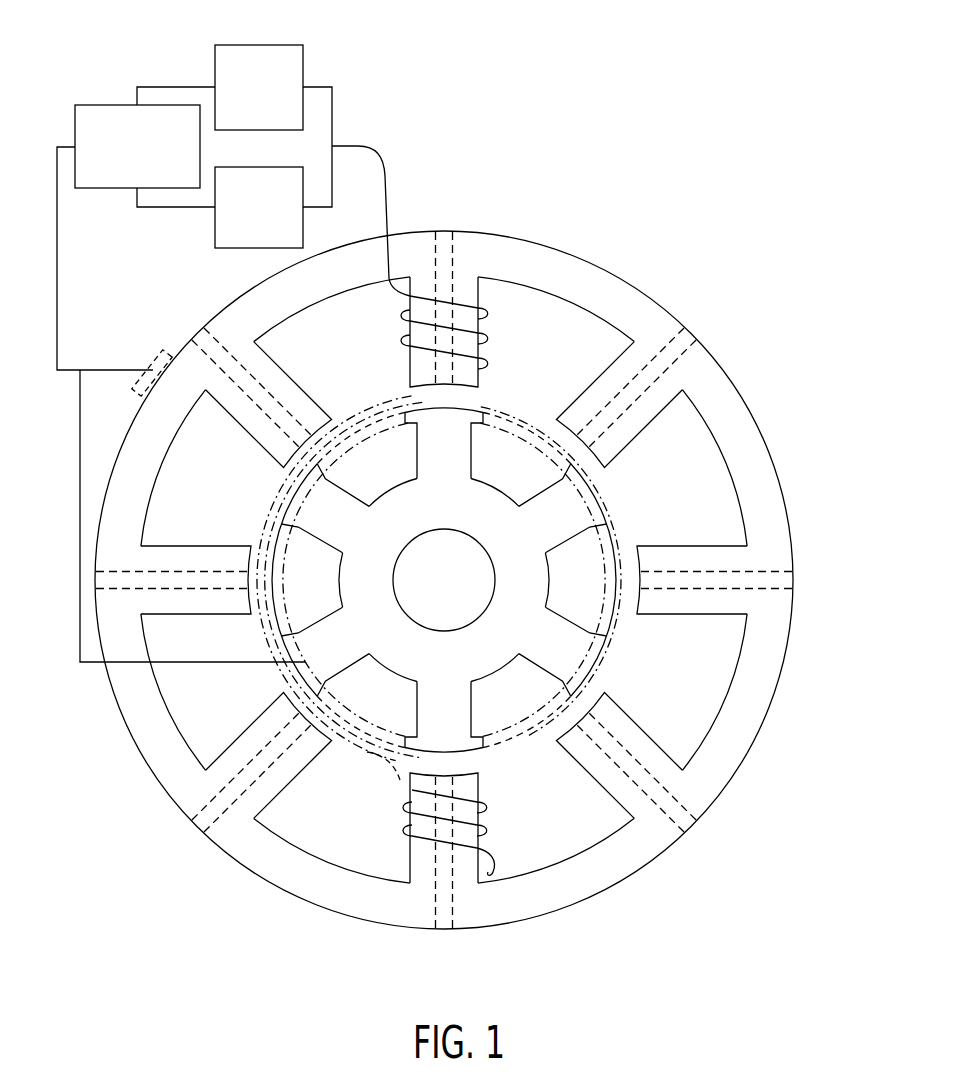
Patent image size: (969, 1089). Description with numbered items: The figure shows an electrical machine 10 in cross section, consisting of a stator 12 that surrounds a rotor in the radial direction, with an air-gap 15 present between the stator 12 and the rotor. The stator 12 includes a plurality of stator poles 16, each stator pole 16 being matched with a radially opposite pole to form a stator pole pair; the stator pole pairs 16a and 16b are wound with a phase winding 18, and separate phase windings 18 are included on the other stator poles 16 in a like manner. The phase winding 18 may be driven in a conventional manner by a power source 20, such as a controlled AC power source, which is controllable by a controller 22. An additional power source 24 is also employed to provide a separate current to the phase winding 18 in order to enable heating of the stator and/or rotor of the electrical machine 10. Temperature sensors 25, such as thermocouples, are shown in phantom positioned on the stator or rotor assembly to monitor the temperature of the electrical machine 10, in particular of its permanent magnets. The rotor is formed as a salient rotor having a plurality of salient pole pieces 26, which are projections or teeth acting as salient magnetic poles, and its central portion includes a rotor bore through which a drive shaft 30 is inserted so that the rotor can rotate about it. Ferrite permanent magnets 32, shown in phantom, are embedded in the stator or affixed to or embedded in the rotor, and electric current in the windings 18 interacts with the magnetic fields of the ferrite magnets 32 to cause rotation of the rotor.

The electrical machine 10 is at (598, 238).
The stator 12 is at (717, 377).
The air-gap 15 is at (596, 478).
The stator poles 16 is at (247, 428).
The stator pole pair 16a is at (478, 320).
The stator pole pair 16b is at (487, 808).
The phase winding 18 is at (402, 300).
The power source 20 is at (258, 45).
The controller 22 is at (105, 188).
The additional power source 24 is at (237, 248).
The temperature sensors 25 is at (157, 360).
The salient pole pieces 26 is at (330, 533).
The drive shaft 30 is at (458, 593).
The ferrite permanent magnets 32 is at (518, 478).